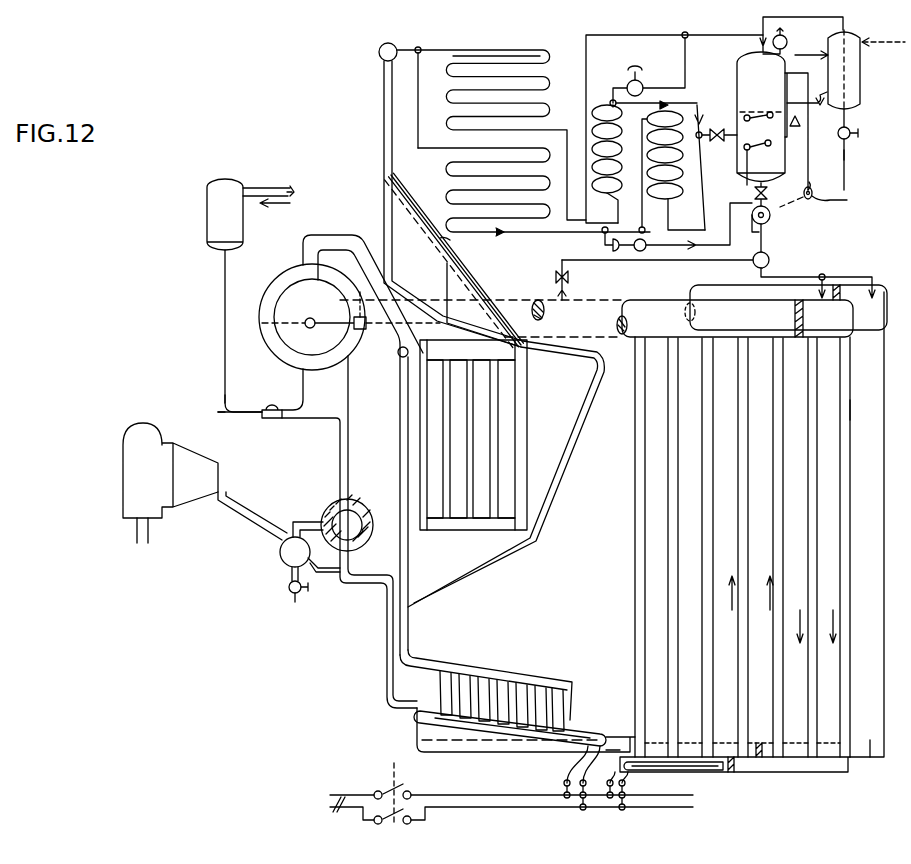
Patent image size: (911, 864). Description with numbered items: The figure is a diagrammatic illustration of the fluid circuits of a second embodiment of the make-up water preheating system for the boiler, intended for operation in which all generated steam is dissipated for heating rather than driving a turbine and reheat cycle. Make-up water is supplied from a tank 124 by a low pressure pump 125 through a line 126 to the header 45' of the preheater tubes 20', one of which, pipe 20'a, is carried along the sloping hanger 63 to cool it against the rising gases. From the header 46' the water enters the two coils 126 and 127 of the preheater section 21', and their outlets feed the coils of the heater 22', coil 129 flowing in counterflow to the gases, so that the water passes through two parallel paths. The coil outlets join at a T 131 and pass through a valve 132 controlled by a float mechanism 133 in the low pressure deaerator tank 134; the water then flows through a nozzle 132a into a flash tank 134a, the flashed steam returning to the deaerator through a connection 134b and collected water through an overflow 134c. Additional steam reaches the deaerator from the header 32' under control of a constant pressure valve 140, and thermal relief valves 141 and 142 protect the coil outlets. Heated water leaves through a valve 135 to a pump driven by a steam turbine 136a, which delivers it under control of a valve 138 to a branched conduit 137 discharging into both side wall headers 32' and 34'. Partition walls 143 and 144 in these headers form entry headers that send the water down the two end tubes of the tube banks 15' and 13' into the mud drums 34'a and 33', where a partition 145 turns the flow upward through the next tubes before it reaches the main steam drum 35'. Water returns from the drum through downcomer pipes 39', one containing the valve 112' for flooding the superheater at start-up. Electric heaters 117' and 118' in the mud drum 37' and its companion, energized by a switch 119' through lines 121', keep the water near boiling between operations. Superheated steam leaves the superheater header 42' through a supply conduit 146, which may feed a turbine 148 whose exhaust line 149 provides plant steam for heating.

The bank of wall tubes 13' is at (724, 547).
The bank of wall tubes 15' is at (847, 459).
The preheater tubes 20' is at (470, 334).
The preheater pipe carried along hanger 20'a is at (454, 261).
The preheater section 21' is at (491, 122).
The heater 22' is at (674, 127).
The side wall header 32' is at (596, 305).
The mud drum 33' is at (735, 779).
The side wall header 34' is at (860, 498).
The mud drum 34'a is at (855, 770).
The main steam drum 35' is at (344, 471).
The mud drum 37' is at (524, 723).
The water return pipes 39' is at (410, 435).
The superheater header 42' is at (288, 569).
The header of preheater tubes 45' is at (376, 498).
The header 46' is at (370, 75).
The sloping hanger 63 is at (452, 242).
The valve 112' is at (334, 516).
The electric heater 117' is at (485, 690).
The electric heater 118' is at (673, 778).
The switch 119' is at (511, 805).
The power lines 121' is at (343, 818).
The make-up water tank 124 is at (207, 224).
The low pressure pump 125 is at (264, 406).
The line / preheater coil 126 is at (545, 56).
The preheater coil 127 is at (453, 194).
The heater coil 129 is at (683, 191).
The T connection 131 is at (702, 120).
The valve 132 is at (717, 141).
The nozzle 132a is at (839, 163).
The float mechanism 133 is at (762, 137).
The low pressure deaerator tank 134 is at (741, 75).
The flash tank 134a is at (862, 92).
The connection 134b is at (801, 35).
The overflow 134c is at (833, 148).
The valve 135 is at (752, 193).
The steam turbine 136a is at (815, 190).
The conduit 137 is at (806, 262).
The valve 138 is at (752, 265).
The constant pressure valve 140 is at (558, 270).
The thermal relief valve 141 is at (640, 252).
The thermal relief valve 142 is at (627, 83).
The partition wall 143 is at (794, 320).
The partition wall 144 is at (845, 296).
The partition 145 is at (734, 775).
The superheated supply conduit 146 is at (272, 533).
The turbine 148 is at (193, 462).
The exhaust line 149 is at (149, 534).